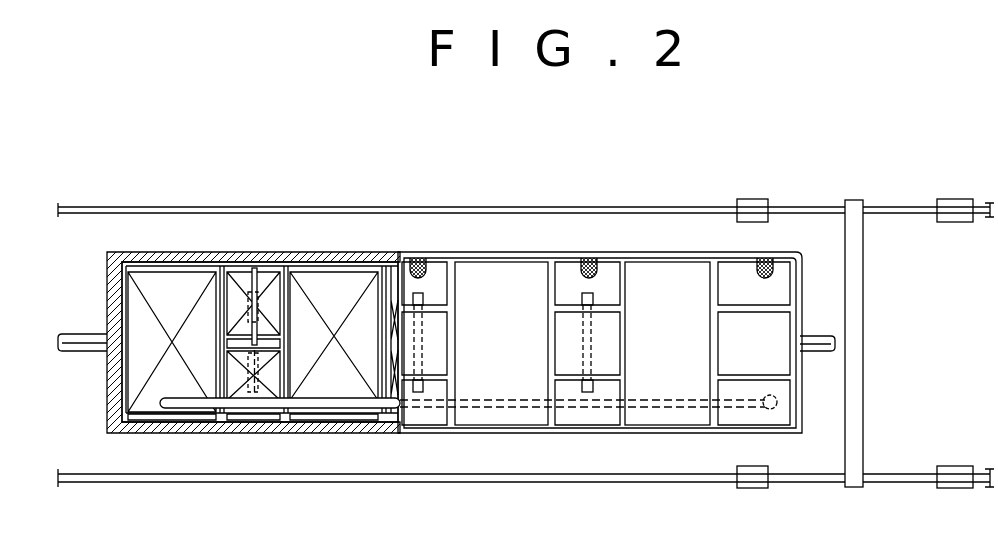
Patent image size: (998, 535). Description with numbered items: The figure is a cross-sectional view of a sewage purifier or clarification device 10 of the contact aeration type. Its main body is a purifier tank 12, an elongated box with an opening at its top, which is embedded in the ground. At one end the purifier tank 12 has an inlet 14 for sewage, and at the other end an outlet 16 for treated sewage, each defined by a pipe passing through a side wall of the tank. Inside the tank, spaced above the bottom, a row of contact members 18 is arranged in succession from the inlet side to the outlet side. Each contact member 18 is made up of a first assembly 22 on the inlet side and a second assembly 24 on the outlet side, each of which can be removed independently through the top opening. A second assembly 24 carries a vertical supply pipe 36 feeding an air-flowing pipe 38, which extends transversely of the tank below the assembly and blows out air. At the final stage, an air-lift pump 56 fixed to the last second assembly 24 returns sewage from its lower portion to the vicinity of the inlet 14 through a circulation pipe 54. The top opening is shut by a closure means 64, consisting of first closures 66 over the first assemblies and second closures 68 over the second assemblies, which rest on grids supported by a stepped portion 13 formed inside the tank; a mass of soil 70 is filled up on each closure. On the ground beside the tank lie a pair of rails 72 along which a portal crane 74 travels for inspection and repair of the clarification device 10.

The clarification device 10 is at (526, 320).
The purifier tank 12 is at (597, 258).
The stepped portion 13 is at (185, 257).
The inlet 14 is at (88, 338).
The outlet 16 is at (818, 336).
The contact member 18 is at (205, 423).
The first assembly 22 is at (136, 428).
The second assembly 24 is at (253, 412).
The supply pipe 36 is at (251, 283).
The air-flowing pipe 38 is at (257, 378).
The circulation pipe 54 is at (310, 412).
The air-lift pump 56 is at (772, 416).
The closure means 64 is at (553, 258).
The first closure 66 is at (676, 262).
The second closure 68 is at (792, 266).
The soil 70 is at (523, 414).
The rails 72 is at (573, 207).
The portal crane 74 is at (868, 309).